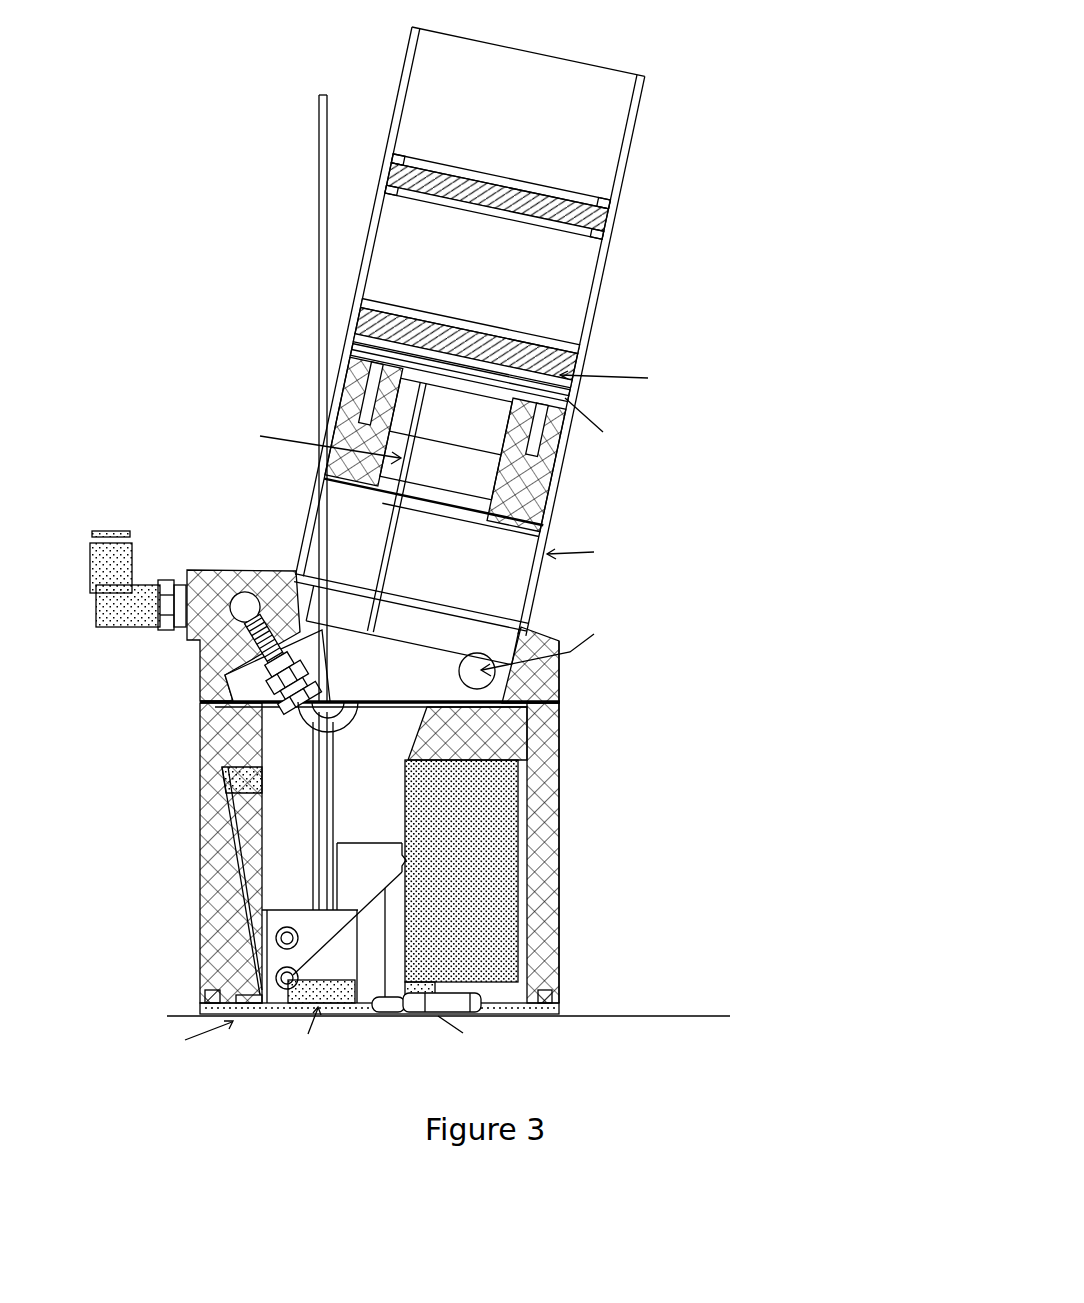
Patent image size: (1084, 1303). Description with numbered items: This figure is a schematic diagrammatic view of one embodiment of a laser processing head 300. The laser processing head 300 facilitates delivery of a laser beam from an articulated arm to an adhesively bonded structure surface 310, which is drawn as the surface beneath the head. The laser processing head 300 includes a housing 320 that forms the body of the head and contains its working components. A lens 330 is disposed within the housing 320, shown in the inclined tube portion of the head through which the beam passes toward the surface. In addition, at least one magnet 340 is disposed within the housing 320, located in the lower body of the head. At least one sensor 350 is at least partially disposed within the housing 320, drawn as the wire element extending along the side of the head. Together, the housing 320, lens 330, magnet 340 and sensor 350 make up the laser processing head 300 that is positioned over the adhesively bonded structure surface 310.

The laser processing head 300 is at (470, 607).
The adhesively bonded structure surface 310 is at (722, 1002).
The housing 320 is at (524, 346).
The lens 330 is at (497, 196).
The magnet 340 is at (478, 870).
The sensor 350 is at (318, 219).